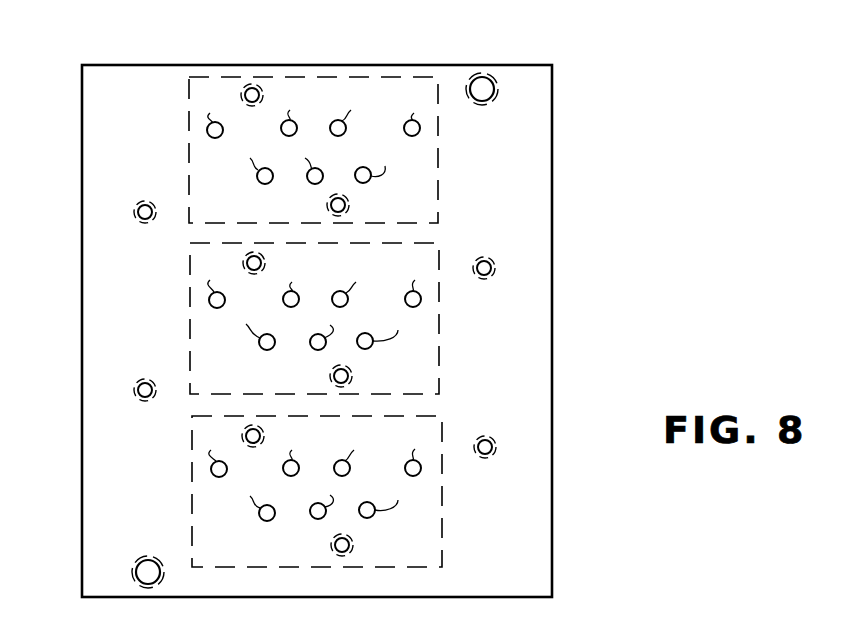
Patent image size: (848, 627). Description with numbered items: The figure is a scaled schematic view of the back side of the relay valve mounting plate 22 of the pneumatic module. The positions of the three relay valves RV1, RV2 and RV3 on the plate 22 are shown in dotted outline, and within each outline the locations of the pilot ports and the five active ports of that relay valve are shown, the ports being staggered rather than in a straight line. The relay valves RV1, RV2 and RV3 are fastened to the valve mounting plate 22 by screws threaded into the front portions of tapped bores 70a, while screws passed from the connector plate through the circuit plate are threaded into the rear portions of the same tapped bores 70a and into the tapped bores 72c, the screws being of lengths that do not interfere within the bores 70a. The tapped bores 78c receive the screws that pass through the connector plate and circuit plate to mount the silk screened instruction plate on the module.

The relay valve mounting plate 22 is at (553, 388).
The relay valve RV1 is at (440, 178).
The relay valve RV2 is at (441, 335).
The relay valve RV3 is at (442, 507).
The tapped bores 70a is at (251, 87).
The tapped bores 72c is at (138, 211).
The tapped bores 78c is at (490, 82).